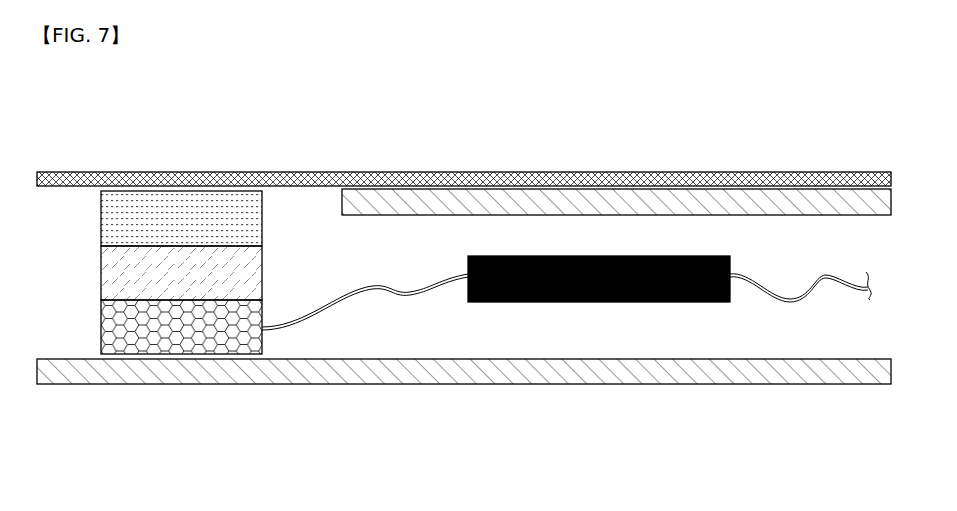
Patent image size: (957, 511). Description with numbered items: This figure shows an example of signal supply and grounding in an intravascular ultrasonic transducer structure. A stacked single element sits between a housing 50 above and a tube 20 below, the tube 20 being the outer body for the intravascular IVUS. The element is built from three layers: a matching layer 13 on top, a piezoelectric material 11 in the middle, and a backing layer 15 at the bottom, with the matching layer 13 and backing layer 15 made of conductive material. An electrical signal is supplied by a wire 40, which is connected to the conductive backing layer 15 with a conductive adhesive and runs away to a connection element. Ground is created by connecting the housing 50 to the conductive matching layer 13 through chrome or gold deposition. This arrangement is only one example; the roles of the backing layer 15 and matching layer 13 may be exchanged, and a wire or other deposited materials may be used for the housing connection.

The housing 50 is at (260, 178).
The tube 20 is at (752, 384).
The matching layer 13 is at (101, 218).
The piezoelectric material 11 is at (101, 271).
The backing layer 15 is at (101, 325).
The wire 40 is at (358, 290).